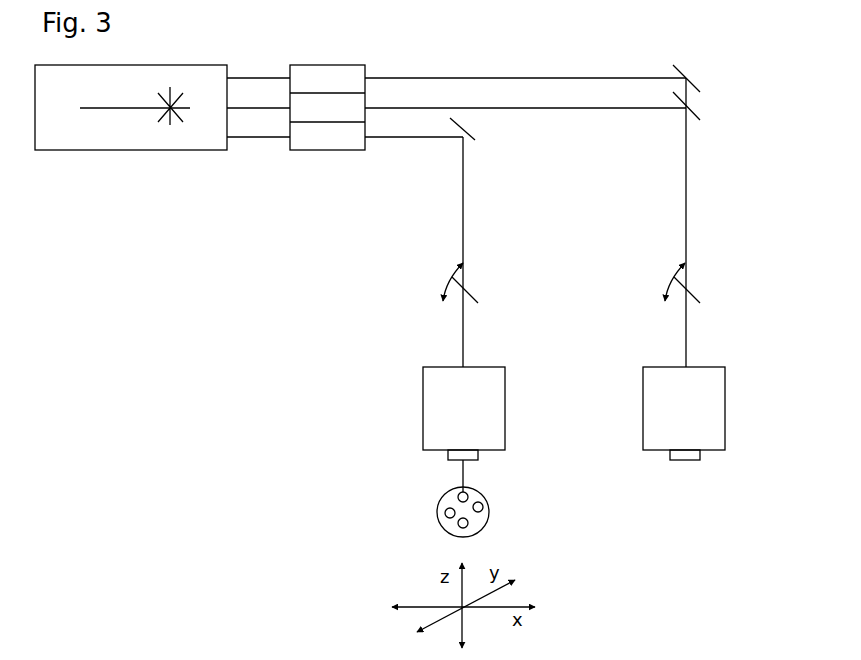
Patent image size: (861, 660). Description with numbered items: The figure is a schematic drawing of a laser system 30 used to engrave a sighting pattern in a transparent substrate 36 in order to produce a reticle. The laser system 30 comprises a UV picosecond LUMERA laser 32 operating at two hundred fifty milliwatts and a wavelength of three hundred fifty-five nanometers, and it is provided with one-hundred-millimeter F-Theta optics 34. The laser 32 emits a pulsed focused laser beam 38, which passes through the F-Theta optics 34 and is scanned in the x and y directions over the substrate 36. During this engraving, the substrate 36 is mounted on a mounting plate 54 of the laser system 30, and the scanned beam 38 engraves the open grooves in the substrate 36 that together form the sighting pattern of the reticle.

The laser system 30 is at (274, 303).
The UV picosecond LUMERA laser 32 is at (150, 151).
The F-Theta optics 34 is at (448, 455).
The substrate 36 is at (470, 493).
The pulsed focused laser beam 38 is at (465, 470).
The mounting plate 54 is at (484, 524).